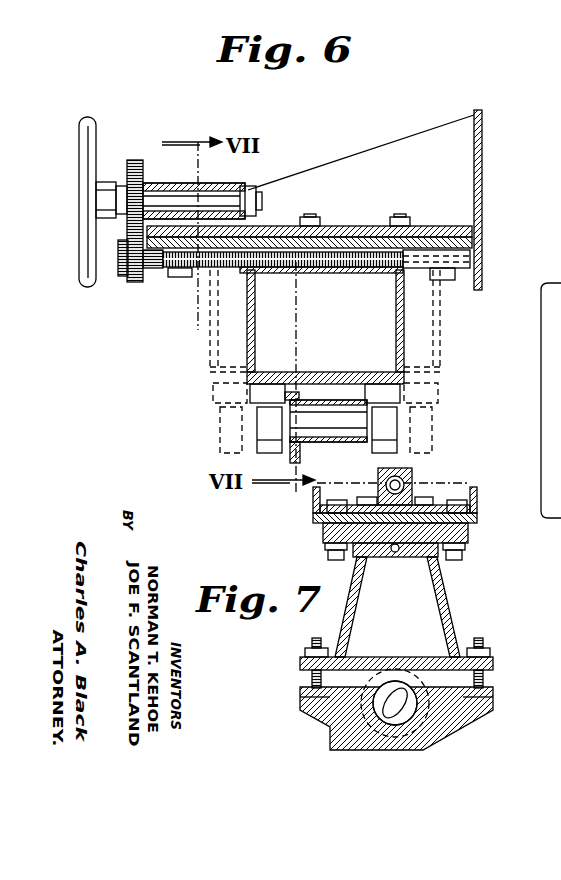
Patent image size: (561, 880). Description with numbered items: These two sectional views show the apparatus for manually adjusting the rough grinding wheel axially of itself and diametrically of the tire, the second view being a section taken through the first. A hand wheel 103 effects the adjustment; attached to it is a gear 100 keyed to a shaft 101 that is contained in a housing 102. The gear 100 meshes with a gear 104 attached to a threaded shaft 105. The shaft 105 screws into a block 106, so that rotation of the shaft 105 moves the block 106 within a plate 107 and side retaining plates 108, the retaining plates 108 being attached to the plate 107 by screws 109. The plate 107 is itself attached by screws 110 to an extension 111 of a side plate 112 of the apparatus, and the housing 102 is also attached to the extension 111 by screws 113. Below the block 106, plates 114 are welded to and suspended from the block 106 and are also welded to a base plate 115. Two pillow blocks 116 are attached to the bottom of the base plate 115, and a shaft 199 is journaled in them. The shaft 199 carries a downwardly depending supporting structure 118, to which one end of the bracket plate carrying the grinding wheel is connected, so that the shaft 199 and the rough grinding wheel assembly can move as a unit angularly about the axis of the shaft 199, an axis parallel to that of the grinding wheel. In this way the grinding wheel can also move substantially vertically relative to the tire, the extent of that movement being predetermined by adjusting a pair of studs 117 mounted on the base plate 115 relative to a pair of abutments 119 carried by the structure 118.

In FIG. 6, the gear 100 is at (134, 160).
In FIG. 6, the shaft 101 is at (249, 186).
In FIG. 6, the housing 102 is at (190, 183).
In FIG. 7, the housing 102 is at (412, 475).
In FIG. 6, the hand wheel 103 is at (89, 117).
In FIG. 6, the gear 104 is at (134, 283).
In FIG. 6, the threaded shaft 105 is at (200, 268).
In FIG. 7, the threaded shaft 105 is at (397, 552).
In FIG. 6, the block 106 is at (330, 273).
In FIG. 7, the block 106 is at (422, 550).
In FIG. 6, the plate 107 is at (463, 243).
In FIG. 7, the plate 107 is at (463, 532).
In FIG. 6, the side retaining plates 108 is at (463, 260).
In FIG. 7, the side retaining plates 108 is at (323, 547).
In FIG. 6, the screws 109 is at (445, 280).
In FIG. 7, the screws 109 is at (327, 559).
In FIG. 6, the screws 110 is at (312, 217).
In FIG. 7, the screws 110 is at (318, 510).
In FIG. 6, the extension 111 is at (268, 226).
In FIG. 7, the extension 111 is at (477, 518).
In FIG. 6, the side plate 112 is at (480, 153).
In FIG. 7, the screws 113 is at (312, 499).
In FIG. 7, the plates 114 is at (363, 590).
In FIG. 6, the base plate 115 is at (273, 372).
In FIG. 7, the base plate 115 is at (400, 665).
In FIG. 6, the pillow blocks 116 is at (380, 397).
In FIG. 7, the studs 117 is at (310, 643).
In FIG. 6, the supporting structure 118 is at (302, 460).
In FIG. 7, the supporting structure 118 is at (435, 735).
In FIG. 7, the abutments 119 is at (300, 698).
In FIG. 6, the shaft 199 is at (313, 413).
In FIG. 7, the shaft 199 is at (386, 698).